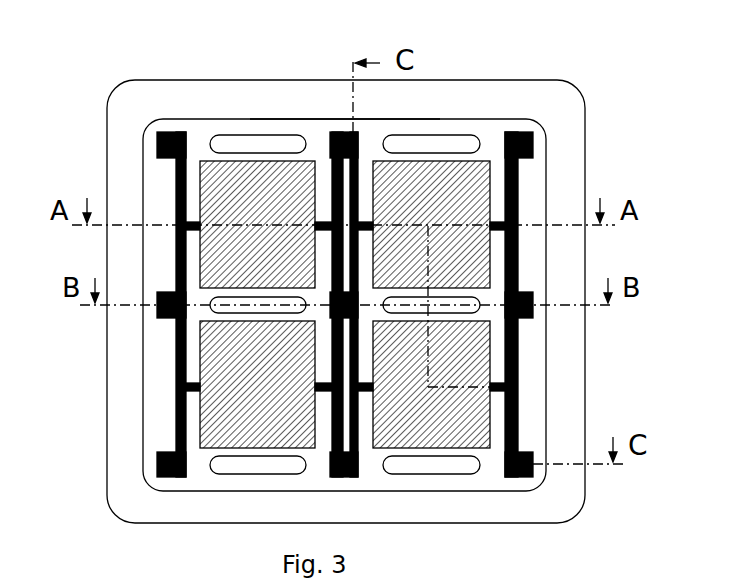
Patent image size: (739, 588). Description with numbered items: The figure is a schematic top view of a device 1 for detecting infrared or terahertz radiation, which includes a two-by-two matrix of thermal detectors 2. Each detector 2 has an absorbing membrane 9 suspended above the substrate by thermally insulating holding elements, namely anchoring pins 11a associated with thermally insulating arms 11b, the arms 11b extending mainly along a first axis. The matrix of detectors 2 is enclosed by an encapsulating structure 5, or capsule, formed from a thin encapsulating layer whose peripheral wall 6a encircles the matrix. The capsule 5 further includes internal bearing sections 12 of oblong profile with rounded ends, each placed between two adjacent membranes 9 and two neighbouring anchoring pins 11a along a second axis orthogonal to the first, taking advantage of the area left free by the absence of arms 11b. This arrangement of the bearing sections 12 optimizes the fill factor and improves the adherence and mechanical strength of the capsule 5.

The detecting device 1 is at (566, 102).
The thermal detectors 2 is at (541, 190).
The encapsulating structure 5 is at (552, 407).
The peripheral wall 6a is at (303, 119).
The absorbing membrane 9 is at (212, 358).
The anchoring pins 11a is at (152, 145).
The thermally insulating arms 11b is at (180, 413).
The internal bearing sections 12 is at (200, 305).